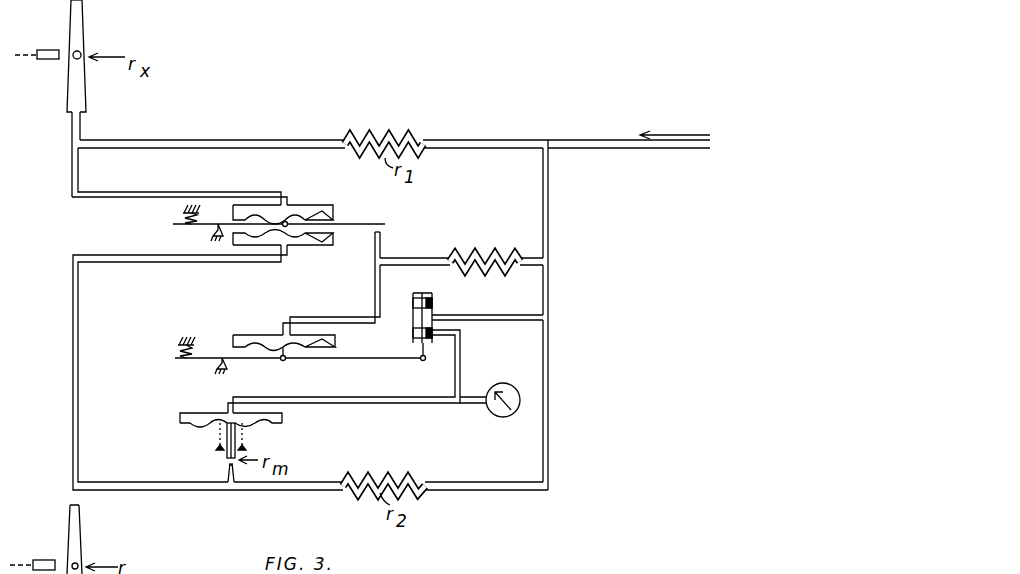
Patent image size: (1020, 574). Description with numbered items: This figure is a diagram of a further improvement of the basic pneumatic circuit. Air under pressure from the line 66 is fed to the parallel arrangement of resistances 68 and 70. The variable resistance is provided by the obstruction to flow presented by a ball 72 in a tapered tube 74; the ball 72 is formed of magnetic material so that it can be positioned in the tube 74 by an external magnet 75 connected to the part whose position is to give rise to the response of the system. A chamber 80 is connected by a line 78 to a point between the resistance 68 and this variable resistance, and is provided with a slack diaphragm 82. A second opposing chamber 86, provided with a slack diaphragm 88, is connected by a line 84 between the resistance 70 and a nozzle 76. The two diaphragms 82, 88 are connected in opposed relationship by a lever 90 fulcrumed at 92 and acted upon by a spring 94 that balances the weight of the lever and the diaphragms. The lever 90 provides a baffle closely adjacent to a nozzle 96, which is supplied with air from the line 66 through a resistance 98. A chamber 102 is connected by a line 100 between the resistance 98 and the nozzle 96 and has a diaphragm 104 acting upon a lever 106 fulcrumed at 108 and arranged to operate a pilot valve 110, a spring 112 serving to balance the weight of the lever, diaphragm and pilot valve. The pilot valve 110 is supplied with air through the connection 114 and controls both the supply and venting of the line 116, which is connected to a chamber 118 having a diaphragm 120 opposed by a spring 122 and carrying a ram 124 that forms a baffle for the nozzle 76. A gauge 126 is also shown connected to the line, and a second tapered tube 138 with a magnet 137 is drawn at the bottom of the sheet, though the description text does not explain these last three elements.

The line 66 is at (607, 148).
The resistance 68 is at (378, 135).
The resistance 70 is at (385, 480).
The ball 72 is at (73, 60).
The tapered tube 74 is at (87, 25).
The external magnet 75 is at (45, 50).
The nozzle 76 is at (228, 467).
The line 78 is at (172, 194).
The chamber 80 is at (290, 207).
The slack diaphragm 82 is at (324, 209).
The line 84 is at (78, 361).
The second opposing chamber 86 is at (298, 247).
The slack diaphragm 88 is at (322, 247).
The lever 90 is at (356, 224).
The fulcrum 92 is at (213, 233).
The spring 94 is at (183, 216).
The nozzle 96 is at (382, 236).
The resistance 98 is at (489, 256).
The line 100 is at (309, 319).
The chamber 102 is at (255, 335).
The diaphragm 104 is at (336, 342).
The lever 106 is at (345, 360).
The fulcrum 108 is at (215, 366).
The pilot valve 110 is at (440, 303).
The spring 112 is at (178, 352).
The connection 114 is at (496, 315).
The line 116 is at (461, 366).
The chamber 118 is at (190, 413).
The diaphragm 120 is at (200, 425).
The spring 122 is at (246, 439).
The ram 124 is at (227, 446).
The gauge 126 is at (522, 372).
The scale element 137 is at (45, 558).
The pointer 138 is at (78, 537).